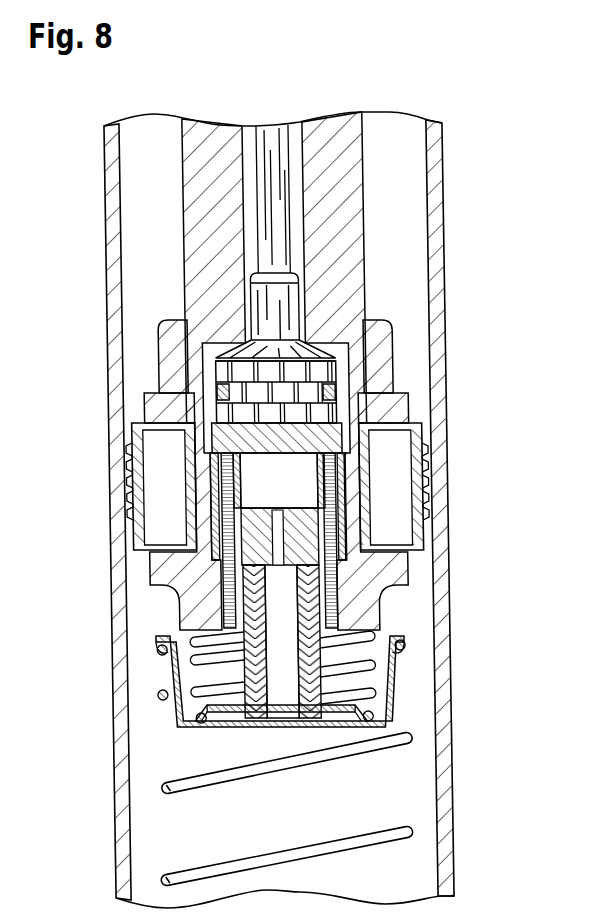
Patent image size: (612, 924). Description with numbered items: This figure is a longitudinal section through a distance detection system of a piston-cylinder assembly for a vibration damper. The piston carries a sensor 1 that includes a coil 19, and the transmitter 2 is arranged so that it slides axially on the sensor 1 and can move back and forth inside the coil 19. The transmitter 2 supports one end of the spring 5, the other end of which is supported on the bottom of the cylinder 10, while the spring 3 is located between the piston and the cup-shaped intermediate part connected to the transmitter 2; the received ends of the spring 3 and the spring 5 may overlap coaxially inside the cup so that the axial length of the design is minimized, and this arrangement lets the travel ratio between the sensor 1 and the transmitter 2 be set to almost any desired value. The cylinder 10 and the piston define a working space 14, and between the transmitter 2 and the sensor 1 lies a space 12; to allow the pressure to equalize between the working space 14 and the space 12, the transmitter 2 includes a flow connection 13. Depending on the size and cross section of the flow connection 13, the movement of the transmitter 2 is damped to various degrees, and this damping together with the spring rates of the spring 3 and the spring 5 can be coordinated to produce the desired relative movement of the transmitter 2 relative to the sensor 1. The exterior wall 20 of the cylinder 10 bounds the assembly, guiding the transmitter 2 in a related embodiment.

The sensor 1 is at (336, 415).
The transmitter 2 is at (325, 529).
The spring 3 is at (368, 663).
The spring 5 is at (188, 783).
The cylinder 10 is at (429, 877).
The space 12 is at (287, 478).
The flow connection 13 is at (217, 516).
The working space 14 is at (397, 700).
The coil 19 is at (307, 512).
The exterior wall 20 is at (396, 788).